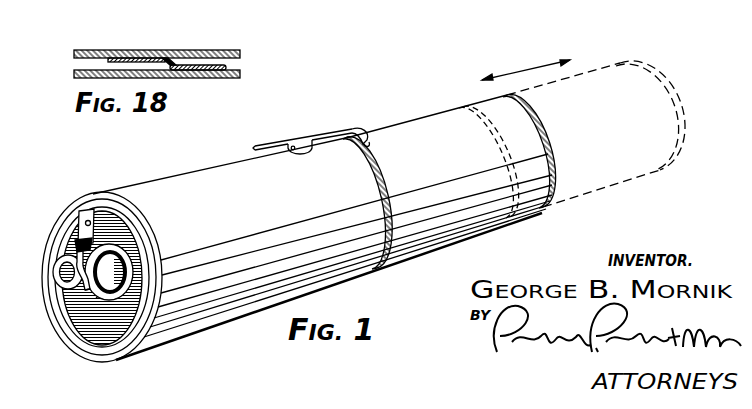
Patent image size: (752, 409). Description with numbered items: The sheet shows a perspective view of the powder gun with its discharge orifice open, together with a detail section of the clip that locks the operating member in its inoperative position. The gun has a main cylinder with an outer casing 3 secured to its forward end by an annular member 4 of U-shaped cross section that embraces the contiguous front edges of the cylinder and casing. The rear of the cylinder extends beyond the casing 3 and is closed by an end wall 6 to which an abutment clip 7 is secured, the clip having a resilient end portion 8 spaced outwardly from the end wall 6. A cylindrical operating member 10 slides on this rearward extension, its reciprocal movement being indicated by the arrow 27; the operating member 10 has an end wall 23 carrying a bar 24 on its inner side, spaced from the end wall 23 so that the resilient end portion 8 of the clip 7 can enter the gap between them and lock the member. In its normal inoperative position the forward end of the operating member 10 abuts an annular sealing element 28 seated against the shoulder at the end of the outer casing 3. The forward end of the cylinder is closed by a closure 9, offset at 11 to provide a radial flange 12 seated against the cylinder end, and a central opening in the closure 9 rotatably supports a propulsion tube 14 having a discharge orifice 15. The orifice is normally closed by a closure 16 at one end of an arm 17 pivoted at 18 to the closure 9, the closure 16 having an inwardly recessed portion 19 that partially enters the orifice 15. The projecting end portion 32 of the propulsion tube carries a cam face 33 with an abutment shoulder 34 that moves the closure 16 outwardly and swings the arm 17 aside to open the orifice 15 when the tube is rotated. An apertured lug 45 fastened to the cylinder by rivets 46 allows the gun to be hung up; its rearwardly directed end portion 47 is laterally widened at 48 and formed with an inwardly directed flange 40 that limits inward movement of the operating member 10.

In FIG. 1, the outer casing 3 is at (187, 176).
In FIG. 1, the annular member 4 is at (161, 286).
In FIG. 18, the end wall 6 is at (232, 78).
In FIG. 18, the abutment clip 7 is at (200, 70).
In FIG. 18, the resilient end portion 8 is at (124, 58).
In FIG. 1, the closure 9 is at (113, 333).
In FIG. 1, the operating member 10 is at (431, 126).
In FIG. 1, the offset 11 is at (92, 340).
In FIG. 1, the radial flange 12 is at (155, 262).
In FIG. 1, the propulsion tube 14 is at (100, 286).
In FIG. 1, the discharge orifice 15 is at (102, 257).
In FIG. 1, the closure 16 is at (76, 253).
In FIG. 1, the arm 17 is at (72, 236).
In FIG. 1, the pivot 18 is at (87, 219).
In FIG. 1, the inwardly recessed portion 19 is at (60, 279).
In FIG. 18, the end wall 23 is at (222, 50).
In FIG. 18, the bar 24 is at (157, 58).
In FIG. 1, the arrow 27 is at (525, 63).
In FIG. 1, the annular sealing element 28 is at (380, 177).
In FIG. 1, the projecting end portion 32 is at (103, 293).
In FIG. 1, the cam face 33 is at (113, 266).
In FIG. 1, the abutment shoulder 34 is at (127, 267).
In FIG. 1, the inwardly directed flange 40 is at (368, 139).
In FIG. 1, the apertured lug 45 is at (290, 144).
In FIG. 1, the rivets 46 is at (309, 141).
In FIG. 1, the rearwardly directed end portion 47 is at (330, 133).
In FIG. 1, the laterally widened portion 48 is at (363, 128).